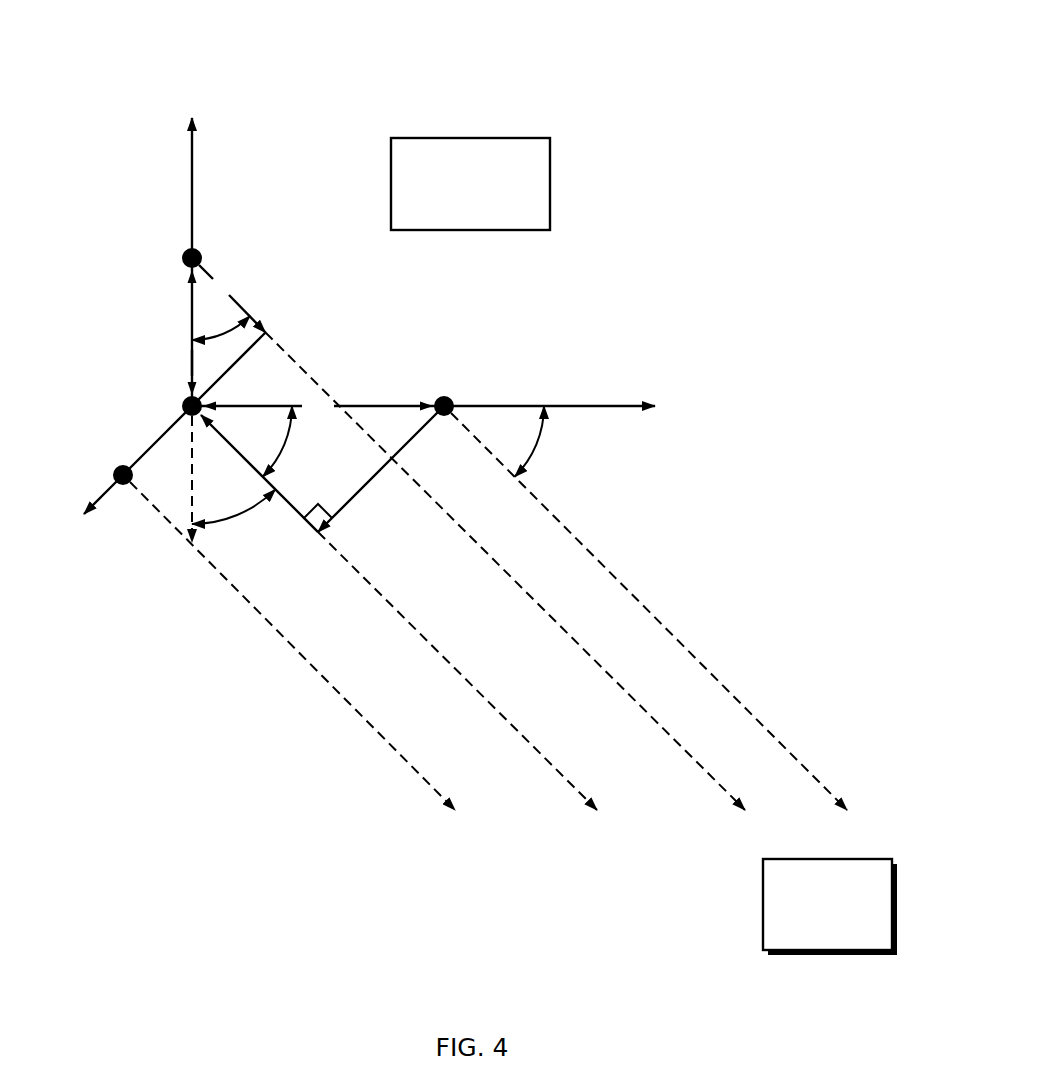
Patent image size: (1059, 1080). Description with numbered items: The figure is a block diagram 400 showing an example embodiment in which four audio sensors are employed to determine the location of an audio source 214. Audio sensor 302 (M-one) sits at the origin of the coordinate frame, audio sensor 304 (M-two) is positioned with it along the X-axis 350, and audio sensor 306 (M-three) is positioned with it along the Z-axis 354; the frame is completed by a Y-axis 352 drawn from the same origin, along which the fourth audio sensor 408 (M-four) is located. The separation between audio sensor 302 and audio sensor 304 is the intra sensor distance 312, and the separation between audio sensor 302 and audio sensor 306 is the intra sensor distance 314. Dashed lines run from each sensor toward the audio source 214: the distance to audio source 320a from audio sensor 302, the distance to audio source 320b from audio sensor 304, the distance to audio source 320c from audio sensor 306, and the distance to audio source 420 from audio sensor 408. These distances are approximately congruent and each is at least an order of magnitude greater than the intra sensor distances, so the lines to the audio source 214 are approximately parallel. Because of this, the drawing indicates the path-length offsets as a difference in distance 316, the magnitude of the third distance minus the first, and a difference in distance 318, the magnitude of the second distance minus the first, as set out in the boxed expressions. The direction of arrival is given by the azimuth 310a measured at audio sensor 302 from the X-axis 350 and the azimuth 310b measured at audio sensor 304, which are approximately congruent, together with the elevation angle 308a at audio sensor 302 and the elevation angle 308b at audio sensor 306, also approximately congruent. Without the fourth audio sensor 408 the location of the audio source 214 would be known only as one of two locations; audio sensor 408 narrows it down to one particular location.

The block diagram 400 is at (733, 36).
The Z-axis 354 is at (192, 148).
The X-axis 350 is at (610, 405).
The Y-axis 352 is at (113, 478).
The audio sensor M1 302 is at (182, 409).
The audio sensor M2 304 is at (450, 398).
The audio sensor M3 306 is at (186, 252).
The audio sensor M4 408 is at (122, 486).
The intra sensor distance d2 312 is at (403, 403).
The intra sensor distance d3 314 is at (192, 321).
The difference in distance ΔD3 316 is at (209, 274).
The difference in distance ΔD2 318 is at (305, 520).
The elevation angle θ1 308a is at (259, 503).
The elevation angle θ2 308b is at (222, 332).
The azimuth φ1 310a is at (282, 458).
The azimuth φ2 310b is at (533, 458).
The distance to audio source D1 320a is at (575, 790).
The distance to audio source D2 320b is at (747, 710).
The distance to audio source D3 320c is at (587, 650).
The distance to audio source D4 420 is at (388, 743).
The audio source 214 is at (763, 898).